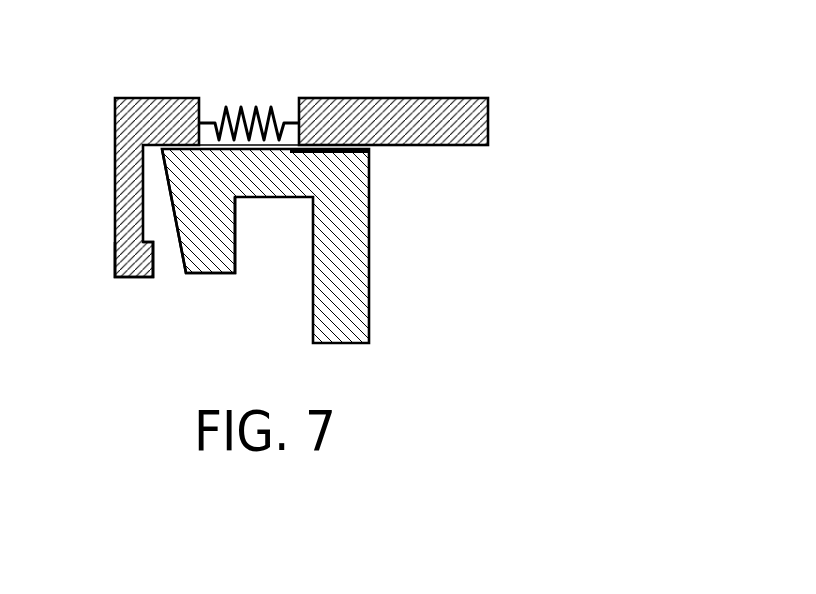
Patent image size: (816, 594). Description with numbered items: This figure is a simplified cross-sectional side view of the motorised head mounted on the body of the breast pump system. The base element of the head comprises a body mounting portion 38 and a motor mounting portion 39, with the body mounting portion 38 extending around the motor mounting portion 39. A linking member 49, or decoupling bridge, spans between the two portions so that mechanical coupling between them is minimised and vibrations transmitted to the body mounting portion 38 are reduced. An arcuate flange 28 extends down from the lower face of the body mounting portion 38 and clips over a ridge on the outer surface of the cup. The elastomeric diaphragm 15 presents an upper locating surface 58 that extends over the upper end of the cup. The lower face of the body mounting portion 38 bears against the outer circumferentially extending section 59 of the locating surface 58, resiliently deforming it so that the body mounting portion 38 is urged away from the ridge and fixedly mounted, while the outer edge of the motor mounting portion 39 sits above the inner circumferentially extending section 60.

The diaphragm 15 is at (353, 260).
The arcuate flange 28 is at (130, 258).
The body mounting portion 38 is at (162, 108).
The motor mounting portion 39 is at (387, 108).
The linking member 49 is at (258, 107).
The upper locating surface 58 is at (258, 152).
The outer circumferentially extending section 59 is at (168, 150).
The inner circumferentially extending section 60 is at (335, 155).